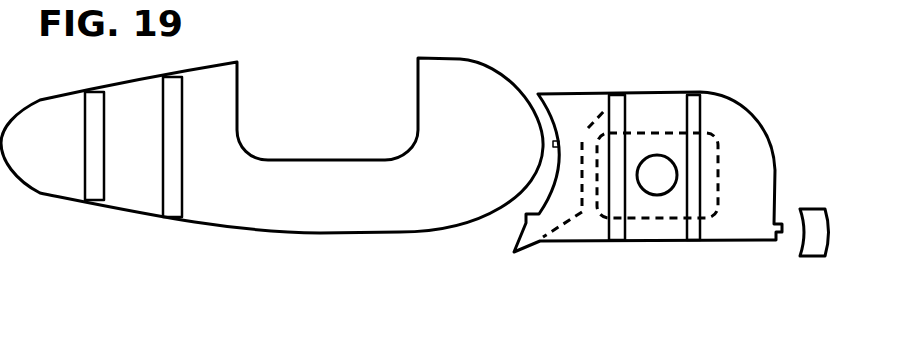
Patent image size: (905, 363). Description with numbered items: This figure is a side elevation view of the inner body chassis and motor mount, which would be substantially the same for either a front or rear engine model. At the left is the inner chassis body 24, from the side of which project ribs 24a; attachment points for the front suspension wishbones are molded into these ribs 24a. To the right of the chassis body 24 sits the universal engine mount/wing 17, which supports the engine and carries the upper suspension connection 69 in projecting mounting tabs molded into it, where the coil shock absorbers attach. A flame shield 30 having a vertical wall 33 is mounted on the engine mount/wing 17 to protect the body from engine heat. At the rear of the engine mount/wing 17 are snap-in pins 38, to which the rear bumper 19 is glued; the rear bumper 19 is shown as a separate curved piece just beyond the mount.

The inner chassis body 24 is at (463, 58).
The ribs 24a is at (85, 118).
The universal engine mount/wing 17 is at (745, 130).
The flame shield 30 is at (589, 103).
The upper suspension connection 69 is at (697, 110).
The vertical wall 33 is at (583, 200).
The snap-in pins 38 is at (780, 234).
The rear bumper 19 is at (828, 229).